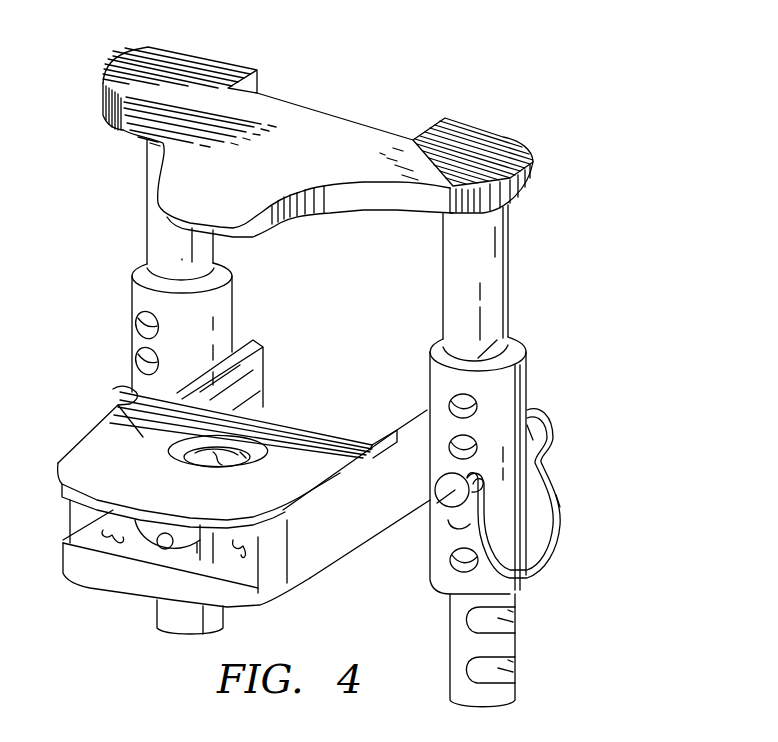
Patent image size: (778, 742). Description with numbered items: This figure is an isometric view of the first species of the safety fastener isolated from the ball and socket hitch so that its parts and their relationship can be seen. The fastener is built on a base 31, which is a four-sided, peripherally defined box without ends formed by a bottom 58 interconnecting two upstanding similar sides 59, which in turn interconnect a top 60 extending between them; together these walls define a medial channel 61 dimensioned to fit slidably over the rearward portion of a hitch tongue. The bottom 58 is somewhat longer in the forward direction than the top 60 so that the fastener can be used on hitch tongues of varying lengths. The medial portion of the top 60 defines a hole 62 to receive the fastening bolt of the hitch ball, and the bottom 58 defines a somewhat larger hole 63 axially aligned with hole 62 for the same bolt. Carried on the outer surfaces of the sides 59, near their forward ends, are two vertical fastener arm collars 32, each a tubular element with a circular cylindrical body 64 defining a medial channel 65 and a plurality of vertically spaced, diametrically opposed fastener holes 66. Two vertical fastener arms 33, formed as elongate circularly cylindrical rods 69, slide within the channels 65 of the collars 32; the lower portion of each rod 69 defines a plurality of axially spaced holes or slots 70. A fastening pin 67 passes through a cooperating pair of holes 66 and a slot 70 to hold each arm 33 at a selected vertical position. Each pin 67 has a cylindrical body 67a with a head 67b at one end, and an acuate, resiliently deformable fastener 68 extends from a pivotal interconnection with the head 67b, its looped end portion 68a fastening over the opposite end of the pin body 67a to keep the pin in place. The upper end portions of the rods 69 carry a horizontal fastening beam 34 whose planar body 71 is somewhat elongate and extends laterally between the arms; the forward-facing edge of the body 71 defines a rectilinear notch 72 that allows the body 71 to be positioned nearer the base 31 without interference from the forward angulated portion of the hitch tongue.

The base 31 is at (355, 410).
The vertical fastener arm collar 32 is at (253, 288).
The vertical fastener arm 33 is at (135, 215).
The horizontal fastening beam 34 is at (235, 42).
The bottom 58 is at (140, 590).
The side 59 is at (268, 380).
The top 60 is at (135, 407).
The medial channel 61 is at (112, 538).
The hole 62 is at (255, 449).
The hole 63 is at (280, 528).
The cylindrical body 64 is at (180, 340).
The medial channel 65 is at (480, 357).
The fastener hole 66 is at (143, 355).
The fastening pin 67 is at (432, 483).
The cylindrical body 67a is at (533, 437).
The head 67b is at (437, 503).
The acuate resiliently deformable fastener 68 is at (557, 540).
The looped end portion 68a is at (560, 507).
The rod 69 is at (168, 252).
The hole or slot 70 is at (165, 540).
The planar body 71 is at (500, 140).
The rectilinear notch 72 is at (338, 100).